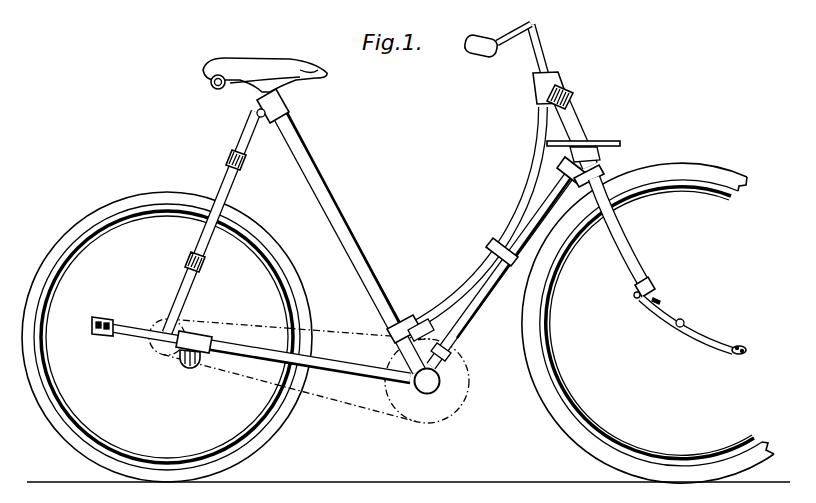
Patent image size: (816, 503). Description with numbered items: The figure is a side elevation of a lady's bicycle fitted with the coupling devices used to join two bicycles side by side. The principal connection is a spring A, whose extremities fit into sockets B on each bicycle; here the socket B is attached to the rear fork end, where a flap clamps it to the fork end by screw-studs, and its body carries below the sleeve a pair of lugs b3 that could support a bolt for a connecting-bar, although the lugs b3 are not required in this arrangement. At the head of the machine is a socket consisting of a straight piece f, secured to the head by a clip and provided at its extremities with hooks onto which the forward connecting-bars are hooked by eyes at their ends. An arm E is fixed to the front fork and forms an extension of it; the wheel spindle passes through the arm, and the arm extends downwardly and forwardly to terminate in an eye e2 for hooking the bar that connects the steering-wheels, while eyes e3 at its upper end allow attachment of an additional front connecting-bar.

The spring A is at (130, 340).
The socket B is at (196, 336).
The lugs b3 is at (190, 366).
The straight piece f is at (619, 142).
The eye e2 is at (650, 287).
The eyes e3 is at (660, 300).
The arm E is at (668, 306).